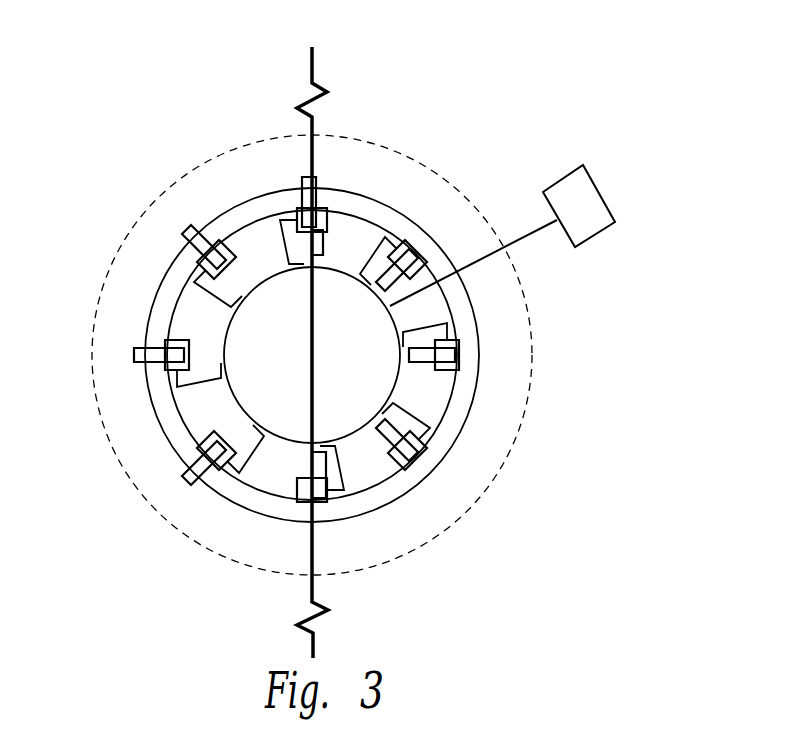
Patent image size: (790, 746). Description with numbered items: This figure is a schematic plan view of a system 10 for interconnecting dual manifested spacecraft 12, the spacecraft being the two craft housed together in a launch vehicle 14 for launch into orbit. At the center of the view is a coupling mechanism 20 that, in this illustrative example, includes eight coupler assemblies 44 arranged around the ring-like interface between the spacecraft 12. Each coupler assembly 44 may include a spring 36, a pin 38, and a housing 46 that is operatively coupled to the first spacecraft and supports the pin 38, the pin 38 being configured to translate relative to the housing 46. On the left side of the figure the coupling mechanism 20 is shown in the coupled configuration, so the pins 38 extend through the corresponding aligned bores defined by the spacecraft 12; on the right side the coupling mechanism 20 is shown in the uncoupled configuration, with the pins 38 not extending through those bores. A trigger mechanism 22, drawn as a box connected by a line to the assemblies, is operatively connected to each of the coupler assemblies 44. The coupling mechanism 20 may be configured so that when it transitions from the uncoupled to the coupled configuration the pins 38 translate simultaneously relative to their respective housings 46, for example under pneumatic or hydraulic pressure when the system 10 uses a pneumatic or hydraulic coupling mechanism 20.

The system for interconnecting dual manifested spacecraft 10 is at (628, 44).
The dual manifested spacecraft 12 is at (472, 122).
The launch vehicle 14 is at (402, 150).
The coupling mechanism 20 is at (424, 192).
The trigger mechanism 22 is at (604, 196).
The spring 36 is at (447, 325).
The pin 38 is at (409, 355).
The coupler assembly 44 is at (327, 168).
The housing 46 is at (460, 368).